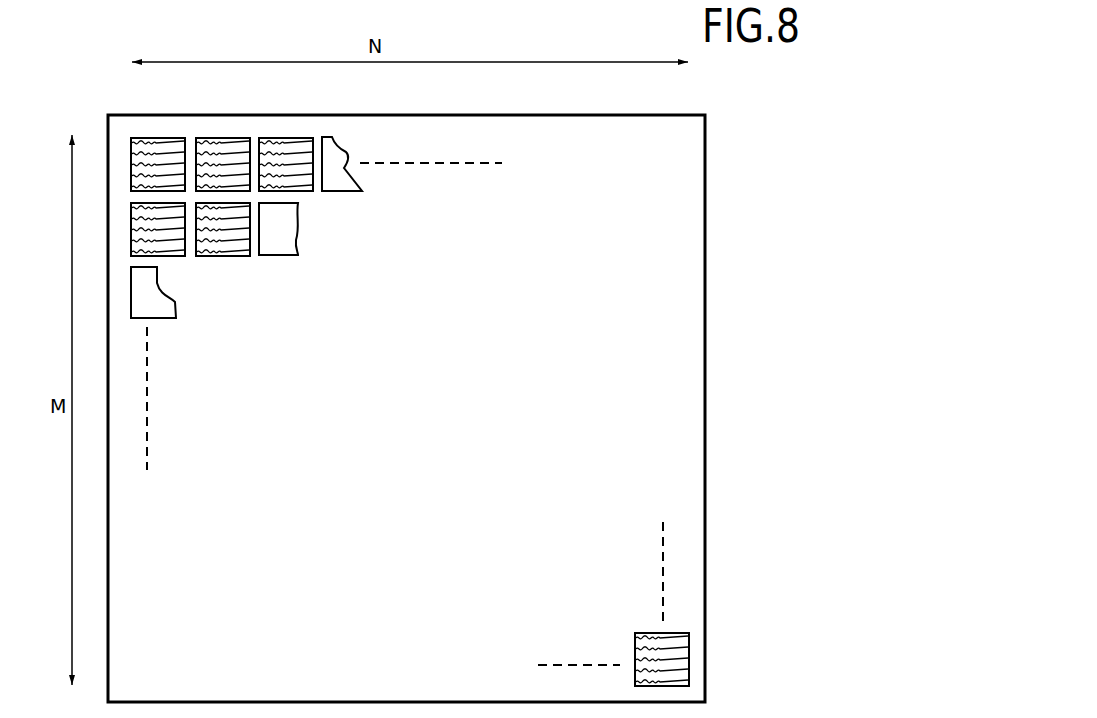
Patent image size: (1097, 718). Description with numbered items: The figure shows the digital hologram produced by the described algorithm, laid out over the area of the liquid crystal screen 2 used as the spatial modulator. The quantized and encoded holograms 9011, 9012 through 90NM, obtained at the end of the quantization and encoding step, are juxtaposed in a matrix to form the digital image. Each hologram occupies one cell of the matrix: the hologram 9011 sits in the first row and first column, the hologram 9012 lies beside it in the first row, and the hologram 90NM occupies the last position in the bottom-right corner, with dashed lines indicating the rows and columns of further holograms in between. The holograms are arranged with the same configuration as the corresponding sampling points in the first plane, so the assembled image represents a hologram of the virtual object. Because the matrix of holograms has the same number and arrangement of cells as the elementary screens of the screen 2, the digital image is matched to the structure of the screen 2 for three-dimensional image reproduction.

The liquid crystal screen 2 is at (687, 392).
The quantized and encoded hologram 9011 is at (146, 147).
The quantized and encoded hologram 9012 is at (207, 147).
The quantized and encoded hologram 90NM is at (684, 651).